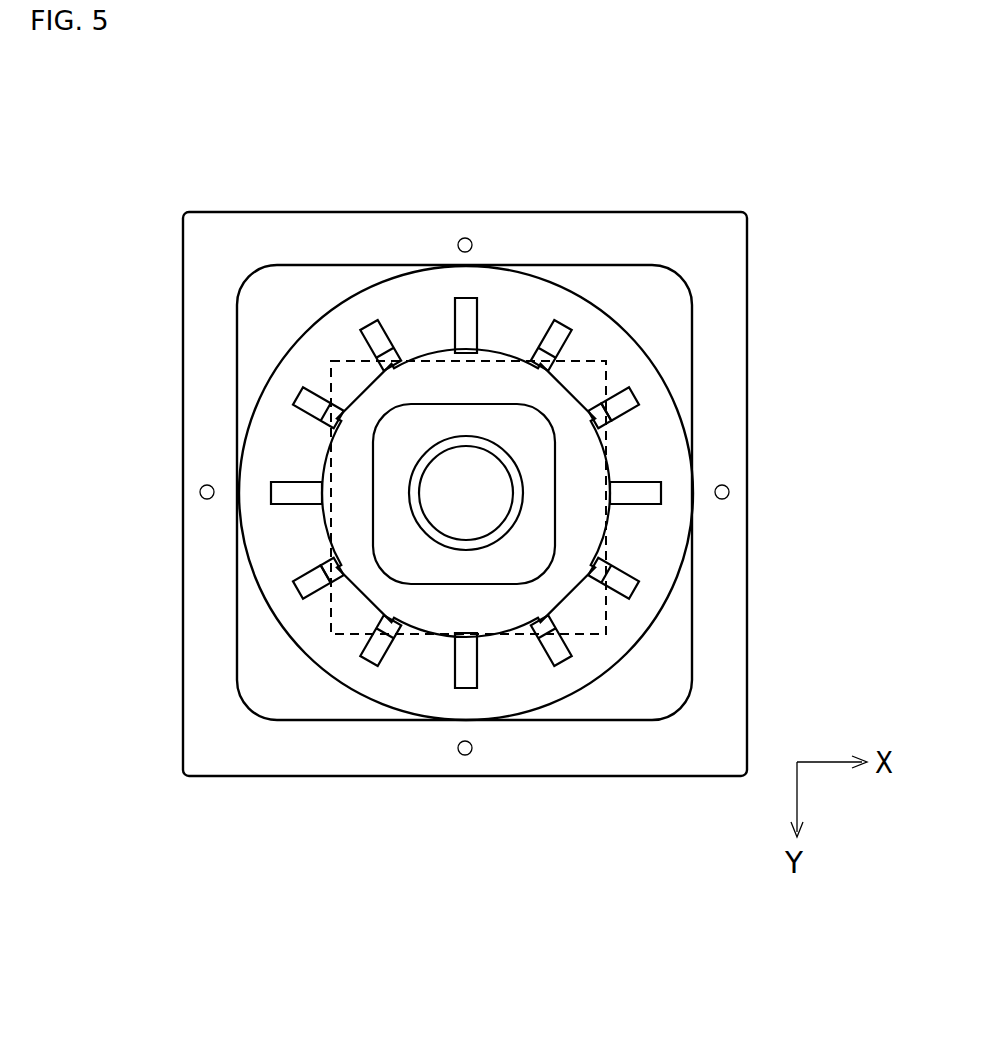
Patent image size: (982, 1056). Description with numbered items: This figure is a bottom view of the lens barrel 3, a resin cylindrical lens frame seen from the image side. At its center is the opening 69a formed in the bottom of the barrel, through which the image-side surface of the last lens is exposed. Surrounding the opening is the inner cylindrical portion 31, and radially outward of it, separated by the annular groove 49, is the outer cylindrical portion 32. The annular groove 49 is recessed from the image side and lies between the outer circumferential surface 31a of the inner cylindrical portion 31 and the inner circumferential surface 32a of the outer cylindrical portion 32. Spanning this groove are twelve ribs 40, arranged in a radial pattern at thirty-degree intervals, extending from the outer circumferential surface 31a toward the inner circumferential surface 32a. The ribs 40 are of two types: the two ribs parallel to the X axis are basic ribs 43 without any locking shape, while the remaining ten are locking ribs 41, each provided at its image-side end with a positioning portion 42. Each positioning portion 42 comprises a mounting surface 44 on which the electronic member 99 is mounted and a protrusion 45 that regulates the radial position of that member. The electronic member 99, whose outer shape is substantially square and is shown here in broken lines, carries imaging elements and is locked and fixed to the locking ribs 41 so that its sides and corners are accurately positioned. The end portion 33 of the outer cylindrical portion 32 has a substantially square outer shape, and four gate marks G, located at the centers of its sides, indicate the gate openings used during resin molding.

The lens barrel 3 is at (99, 114).
The inner cylindrical portion 31 is at (611, 460).
The outer circumferential surface of the inner cylindrical portion 31a is at (320, 517).
The outer cylindrical portion 32 is at (648, 350).
The inner circumferential surface of the outer cylindrical portion 32a is at (262, 551).
The end portion of the outer cylindrical portion 33 is at (748, 252).
The ribs 40 is at (468, 511).
The locking rib 41 is at (305, 388).
The positioning portion 42 is at (459, 511).
The basic rib 43 is at (272, 483).
The mounting surface 44 is at (597, 405).
The protrusion 45 is at (617, 400).
The annular groove 49 is at (281, 567).
The opening 69a is at (432, 478).
The electronic member 99 is at (608, 545).
The gate mark G is at (459, 238).